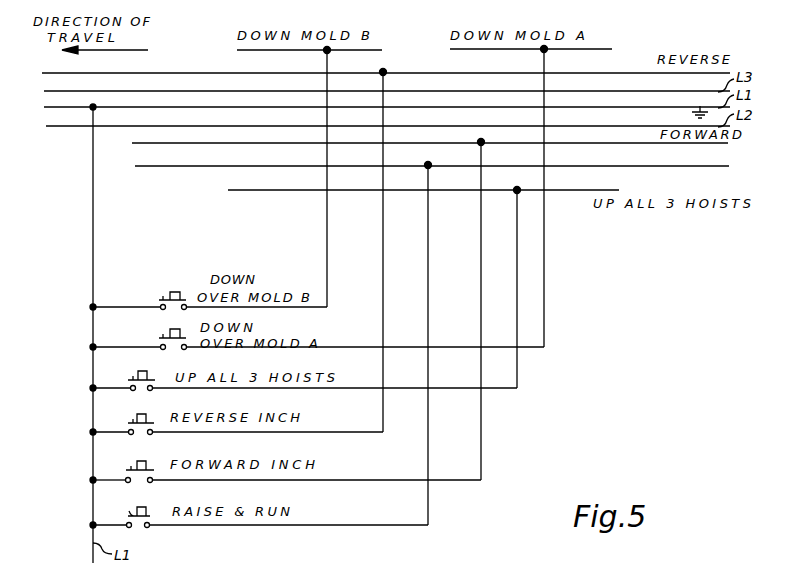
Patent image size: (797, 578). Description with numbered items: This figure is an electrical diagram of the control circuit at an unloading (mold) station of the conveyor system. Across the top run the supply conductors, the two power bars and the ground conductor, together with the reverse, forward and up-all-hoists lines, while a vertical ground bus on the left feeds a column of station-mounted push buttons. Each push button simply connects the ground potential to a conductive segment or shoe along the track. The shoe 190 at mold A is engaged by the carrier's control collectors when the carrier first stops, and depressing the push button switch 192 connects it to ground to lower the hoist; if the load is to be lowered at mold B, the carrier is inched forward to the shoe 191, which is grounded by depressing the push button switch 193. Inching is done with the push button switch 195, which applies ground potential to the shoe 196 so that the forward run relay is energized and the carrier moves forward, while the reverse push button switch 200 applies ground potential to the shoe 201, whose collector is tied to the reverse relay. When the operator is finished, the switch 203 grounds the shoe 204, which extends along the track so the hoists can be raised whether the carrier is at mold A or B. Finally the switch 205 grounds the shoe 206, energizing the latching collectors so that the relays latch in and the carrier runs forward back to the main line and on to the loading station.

The shoe 190 is at (512, 50).
The shoe 191 is at (280, 56).
The push button switch 192 is at (171, 330).
The push button switch 193 is at (171, 292).
The push button switch 195 is at (136, 461).
The conductive segment or shoe 196 is at (529, 131).
The reverse push button switch 200 is at (134, 414).
The conductive segment or shoe 201 is at (416, 73).
The switch 203 is at (134, 372).
The shoe 204 is at (590, 186).
The switch 205 is at (131, 509).
The conductive segment or shoe 206 is at (459, 163).